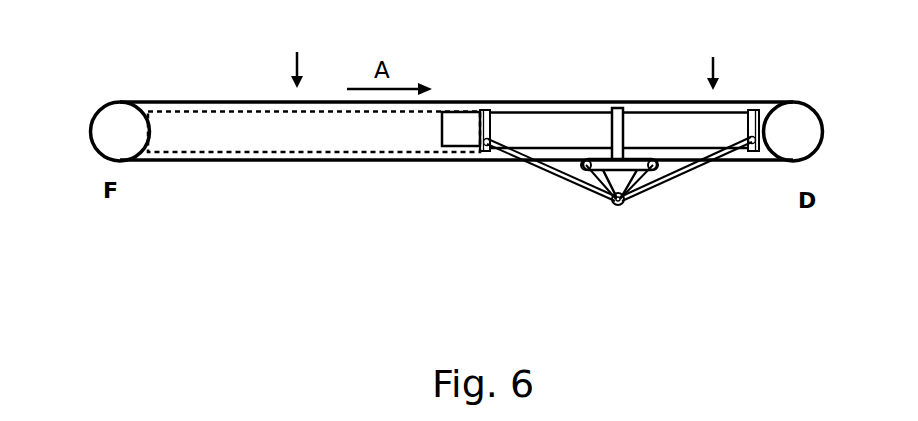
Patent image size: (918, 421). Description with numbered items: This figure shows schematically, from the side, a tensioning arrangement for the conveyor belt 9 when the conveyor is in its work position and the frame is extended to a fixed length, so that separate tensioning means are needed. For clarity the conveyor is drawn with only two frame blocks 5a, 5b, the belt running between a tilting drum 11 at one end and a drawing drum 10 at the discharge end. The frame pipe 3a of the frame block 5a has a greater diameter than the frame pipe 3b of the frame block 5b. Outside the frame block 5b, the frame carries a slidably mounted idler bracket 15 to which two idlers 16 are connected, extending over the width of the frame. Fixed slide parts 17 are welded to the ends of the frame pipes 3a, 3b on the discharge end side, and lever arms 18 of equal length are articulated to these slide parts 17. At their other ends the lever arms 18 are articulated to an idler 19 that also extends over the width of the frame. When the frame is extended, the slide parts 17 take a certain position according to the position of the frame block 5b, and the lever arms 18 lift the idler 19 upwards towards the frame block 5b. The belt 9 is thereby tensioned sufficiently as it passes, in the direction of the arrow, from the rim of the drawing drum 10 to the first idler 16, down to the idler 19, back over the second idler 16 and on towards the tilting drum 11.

The conveyor belt 9 is at (187, 100).
The tilting drum 11 is at (113, 113).
The drawing drum 10 is at (792, 123).
The frame pipe of frame block 5a 3a is at (327, 142).
The frame pipe of frame block 5b 3b is at (555, 127).
The frame block 5a is at (300, 55).
The frame block 5b is at (714, 56).
The idler bracket 15 is at (623, 110).
The idlers 16 is at (592, 175).
The slide parts 17 is at (483, 115).
The lever arms 18 is at (535, 167).
The idler 19 is at (623, 203).